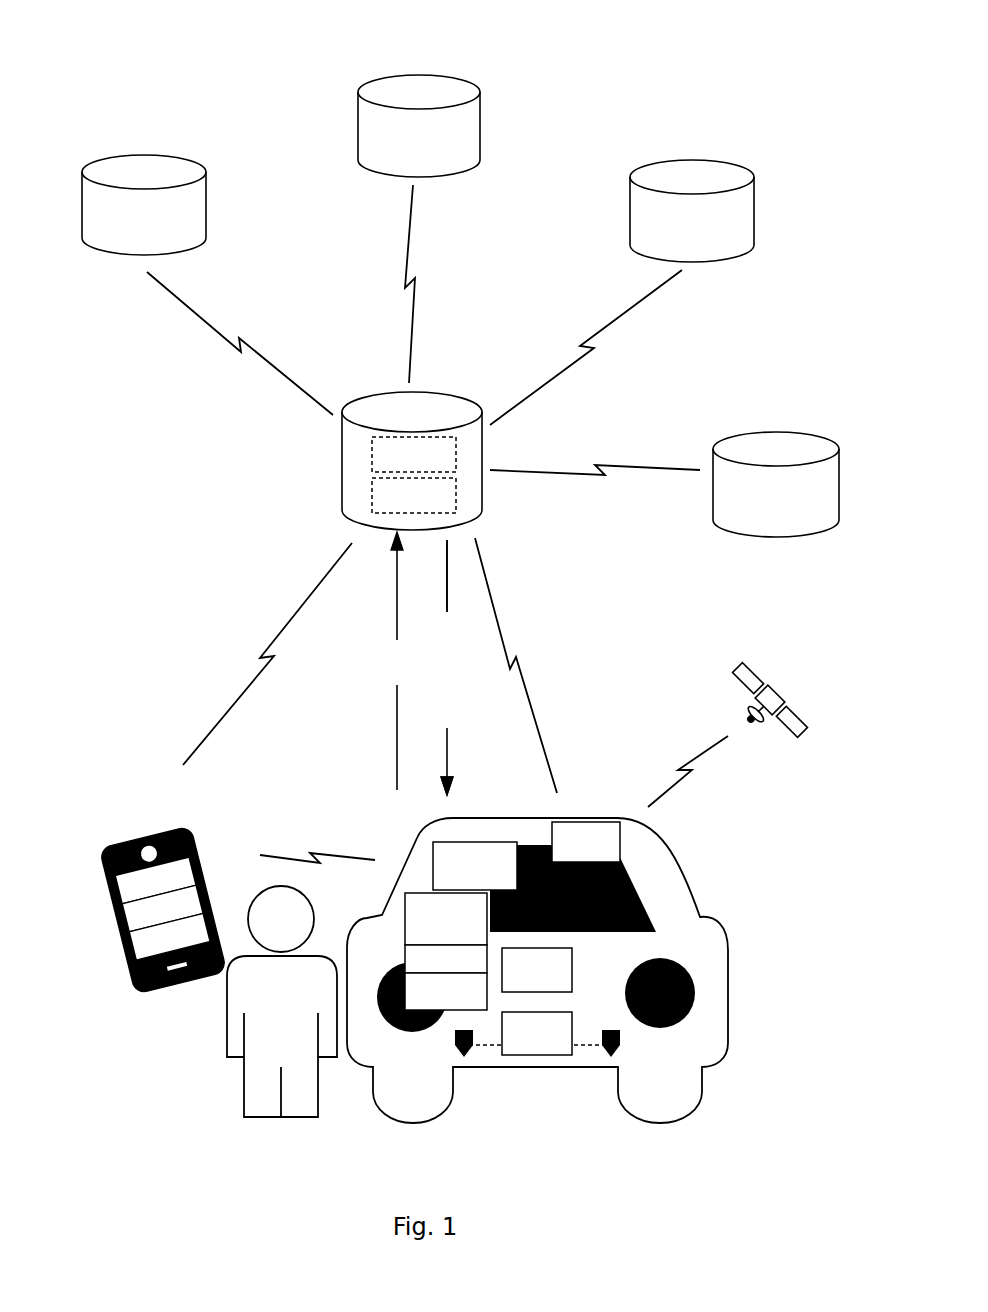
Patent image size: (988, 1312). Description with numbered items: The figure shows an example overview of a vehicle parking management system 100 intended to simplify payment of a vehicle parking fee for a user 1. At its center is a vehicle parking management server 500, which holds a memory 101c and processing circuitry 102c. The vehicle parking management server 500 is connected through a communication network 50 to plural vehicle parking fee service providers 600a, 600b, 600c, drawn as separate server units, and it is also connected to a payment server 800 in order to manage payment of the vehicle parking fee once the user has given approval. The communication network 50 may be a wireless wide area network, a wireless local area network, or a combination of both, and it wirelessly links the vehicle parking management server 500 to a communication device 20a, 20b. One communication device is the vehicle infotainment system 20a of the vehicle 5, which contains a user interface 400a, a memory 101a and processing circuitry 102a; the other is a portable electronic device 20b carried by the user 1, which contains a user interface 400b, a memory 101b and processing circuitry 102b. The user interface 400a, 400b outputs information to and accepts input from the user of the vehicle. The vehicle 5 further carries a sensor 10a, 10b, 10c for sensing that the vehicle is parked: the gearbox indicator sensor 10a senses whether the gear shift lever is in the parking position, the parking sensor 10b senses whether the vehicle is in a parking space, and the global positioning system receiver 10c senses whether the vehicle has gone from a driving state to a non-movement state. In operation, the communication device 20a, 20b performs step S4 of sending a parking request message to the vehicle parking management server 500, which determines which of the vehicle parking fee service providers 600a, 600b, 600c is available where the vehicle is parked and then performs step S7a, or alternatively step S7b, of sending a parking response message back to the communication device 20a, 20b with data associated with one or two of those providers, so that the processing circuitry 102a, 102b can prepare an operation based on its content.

The vehicle parking management system 100 is at (112, 78).
The vehicle parking fee service provider 600a is at (144, 205).
The vehicle parking fee service provider 600b is at (419, 126).
The vehicle parking fee service provider 600c is at (692, 211).
The payment server 800 is at (776, 484).
The vehicle parking management server 500 is at (412, 461).
The memory 101c is at (414, 454).
The processing circuitry 102c is at (414, 495).
The communication network 50 is at (437, 524).
The step of sending the parking request message S4 is at (397, 661).
The step of sending a parking response message S7a is at (447, 667).
The step of sending a parking response message S7b is at (447, 667).
The portable electronic device 20b is at (183, 881).
The user interface 400b is at (155, 880).
The memory 101b is at (162, 908).
The processing circuitry 102b is at (169, 936).
The user 1 is at (282, 1001).
The vehicle 5 is at (580, 970).
The vehicle infotainment system 20a is at (475, 866).
The user interface 400a is at (446, 919).
The memory 101a is at (446, 959).
The processing circuitry 102a is at (446, 991).
The gearbox indicator sensor 10a is at (537, 970).
The parking sensor 10b is at (537, 1033).
The global positioning system receiver 10c is at (586, 842).